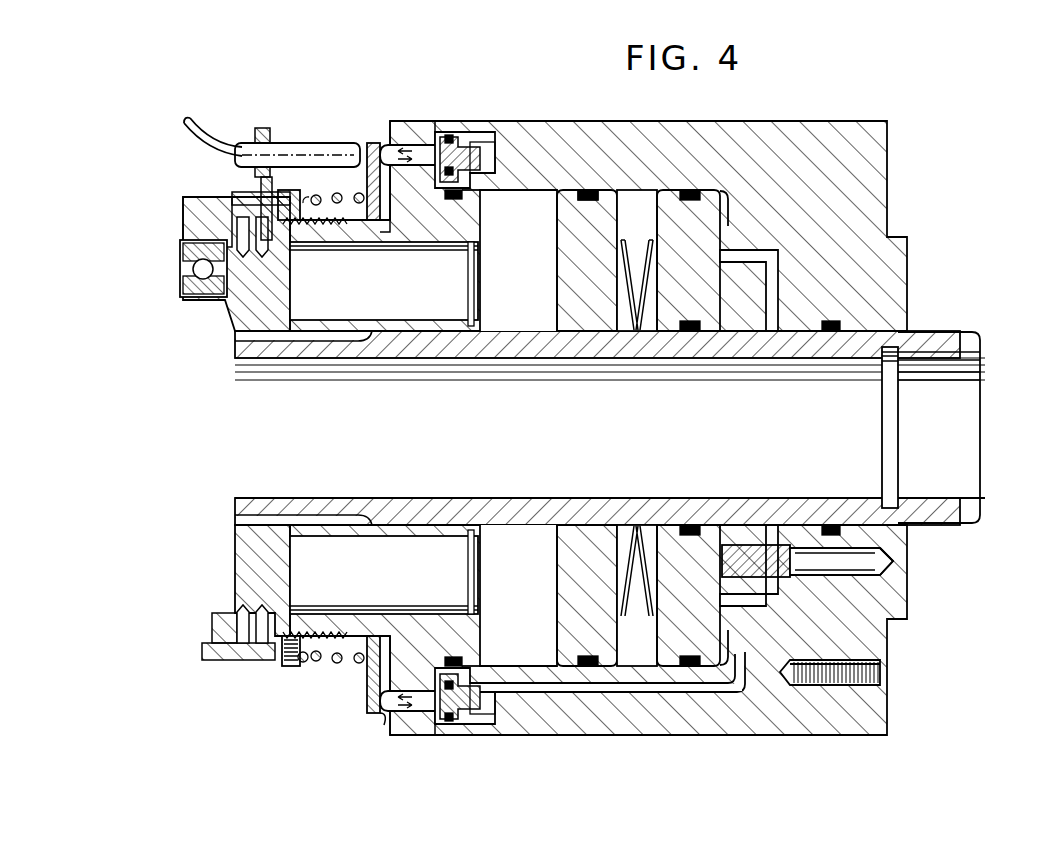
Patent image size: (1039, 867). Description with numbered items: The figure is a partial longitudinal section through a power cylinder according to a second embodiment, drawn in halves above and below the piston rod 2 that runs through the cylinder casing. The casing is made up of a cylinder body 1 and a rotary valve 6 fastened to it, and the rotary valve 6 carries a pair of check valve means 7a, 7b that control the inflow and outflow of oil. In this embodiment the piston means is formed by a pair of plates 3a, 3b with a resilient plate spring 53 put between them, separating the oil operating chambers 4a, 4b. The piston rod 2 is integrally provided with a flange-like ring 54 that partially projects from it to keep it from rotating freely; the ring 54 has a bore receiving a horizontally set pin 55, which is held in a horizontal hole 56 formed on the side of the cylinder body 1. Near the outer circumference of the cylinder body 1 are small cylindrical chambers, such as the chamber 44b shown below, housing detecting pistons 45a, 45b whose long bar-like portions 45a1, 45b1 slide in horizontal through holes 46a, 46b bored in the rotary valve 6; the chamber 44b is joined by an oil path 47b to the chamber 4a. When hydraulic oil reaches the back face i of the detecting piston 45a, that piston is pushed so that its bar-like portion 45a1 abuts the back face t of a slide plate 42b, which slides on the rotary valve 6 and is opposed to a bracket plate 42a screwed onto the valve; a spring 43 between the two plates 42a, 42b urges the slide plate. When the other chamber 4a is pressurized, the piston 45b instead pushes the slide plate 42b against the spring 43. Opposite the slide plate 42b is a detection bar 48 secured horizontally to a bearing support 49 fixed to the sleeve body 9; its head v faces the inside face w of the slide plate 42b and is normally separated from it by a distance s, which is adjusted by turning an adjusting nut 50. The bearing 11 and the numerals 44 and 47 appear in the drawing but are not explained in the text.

The cylinder body 1 is at (880, 135).
The piston rod 2 is at (274, 352).
The plate 3a is at (598, 196).
The plate 3b is at (670, 210).
The operating chamber 4a is at (728, 212).
The operating chamber 4b is at (540, 196).
The rotary valve 6 is at (228, 312).
The check valve means 7a is at (402, 297).
The check valve means 7b is at (402, 592).
The sleeve body 9 is at (200, 216).
The bearing 11 is at (186, 262).
The bracket plate 42a is at (290, 192).
The slide plate 42b is at (380, 150).
The spring 43 is at (318, 195).
The valve block 44 is at (492, 138).
The cylindrical chamber 44b is at (475, 735).
The detecting piston 45a is at (470, 148).
The bar-like portion 45a1 is at (392, 157).
The detecting piston 45b is at (488, 722).
The bar-like portion 45b1 is at (392, 703).
The through hole 46a is at (446, 137).
The through hole 46b is at (446, 723).
The chamber 47 is at (470, 195).
The oil path 47b is at (663, 692).
The detection bar 48 is at (248, 160).
The bearing support 49 is at (264, 128).
The adjusting nut 50 is at (258, 132).
The resilient plate spring 53 is at (641, 262).
The flange-like ring 54 is at (760, 290).
The pin 55 is at (822, 572).
The horizontal hole 56 is at (882, 560).
The distance s is at (373, 143).
The head v is at (357, 145).
The inside face w is at (367, 187).
The back face t is at (390, 210).
The back face i is at (481, 155).